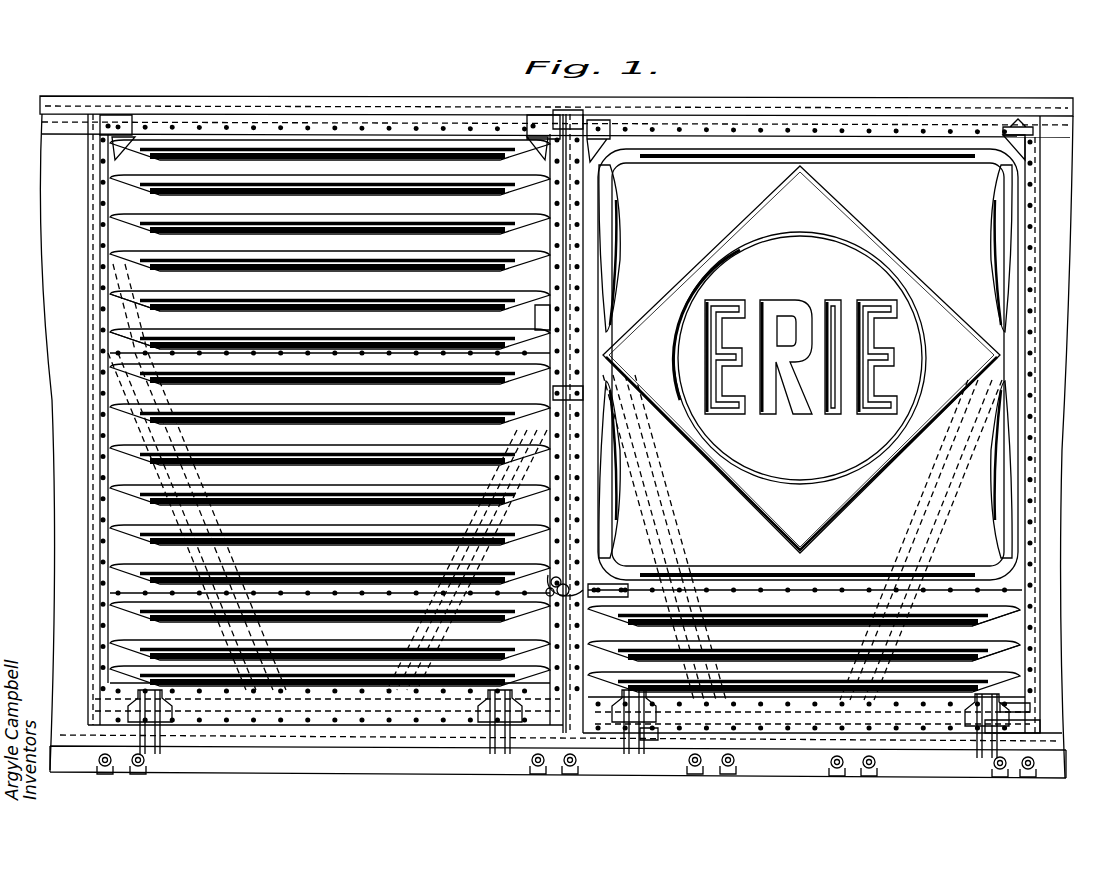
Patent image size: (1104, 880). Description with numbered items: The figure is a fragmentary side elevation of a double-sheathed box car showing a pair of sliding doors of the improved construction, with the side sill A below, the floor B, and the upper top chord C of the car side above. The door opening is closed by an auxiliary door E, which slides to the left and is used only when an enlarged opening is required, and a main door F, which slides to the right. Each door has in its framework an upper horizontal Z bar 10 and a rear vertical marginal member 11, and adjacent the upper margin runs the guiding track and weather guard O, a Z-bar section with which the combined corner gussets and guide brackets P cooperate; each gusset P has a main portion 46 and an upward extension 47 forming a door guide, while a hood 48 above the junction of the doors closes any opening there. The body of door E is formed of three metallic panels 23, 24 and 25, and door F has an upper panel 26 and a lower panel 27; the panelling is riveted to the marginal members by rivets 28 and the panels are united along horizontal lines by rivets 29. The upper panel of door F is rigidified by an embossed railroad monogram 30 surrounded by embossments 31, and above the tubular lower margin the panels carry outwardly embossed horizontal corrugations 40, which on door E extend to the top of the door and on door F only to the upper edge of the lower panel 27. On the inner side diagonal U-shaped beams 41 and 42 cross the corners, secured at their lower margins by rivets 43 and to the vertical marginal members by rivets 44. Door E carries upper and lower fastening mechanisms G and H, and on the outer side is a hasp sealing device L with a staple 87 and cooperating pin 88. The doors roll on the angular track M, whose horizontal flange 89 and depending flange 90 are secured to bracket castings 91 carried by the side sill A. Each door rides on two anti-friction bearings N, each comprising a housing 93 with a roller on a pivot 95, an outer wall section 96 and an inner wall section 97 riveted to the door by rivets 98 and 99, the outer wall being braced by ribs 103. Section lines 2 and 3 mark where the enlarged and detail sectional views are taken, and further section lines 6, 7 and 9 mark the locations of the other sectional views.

The upper top chord C is at (68, 100).
The upper horizontal Z bar 10 is at (388, 128).
The rivets 28 is at (268, 126).
The auxiliary door E is at (138, 198).
The main door F is at (671, 200).
The rear vertical marginal member 11 is at (100, 378).
The metallic panel 23 is at (330, 246).
The metallic panel 24 is at (330, 478).
The lower panel 25 is at (330, 644).
The lower panel 27 is at (1018, 667).
The rivets 29 is at (338, 352).
The horizontally extending corrugations 40 is at (122, 336).
The diagonal beam 41 is at (160, 392).
The diagonal beam 42 is at (545, 445).
The rivets 43 is at (264, 692).
The rivets 44 is at (553, 395).
The main portion of gusset 46 is at (112, 138).
The door guide 47 is at (122, 118).
The hood 48 is at (572, 110).
The combined corner gusset and guide bracket P is at (118, 140).
The embossments 31 is at (918, 158).
The railroad monogram 30 is at (710, 438).
The upper panel 26 is at (799, 358).
The pin 88 is at (600, 548).
The hasp sealing device L is at (616, 558).
The staple 87 is at (552, 582).
The upper door fastening mechanism G is at (525, 306).
The section line 7- 7 is at (513, 290).
The section line 2— 2 is at (332, 62).
The section line 3— 3 is at (527, 150).
The guiding track and weather guard O is at (552, 88).
The section line 6- 6 is at (135, 660).
The floor B is at (58, 714).
The ribs 103 is at (142, 722).
The anti-friction bearing N is at (186, 726).
The door supporting track M is at (230, 746).
The side sill A is at (275, 756).
The lower door fastening mechanism H is at (547, 696).
The horizontal flange 89 is at (447, 736).
The depending flange 90 is at (600, 746).
The wall section 97 is at (618, 736).
The section line 9- 9 is at (630, 790).
The outer wall section 96 is at (645, 740).
The bracket castings 91 is at (716, 770).
The housing 93 is at (968, 718).
The pivot 95 is at (1002, 740).
The rivets 98 is at (1032, 708).
The rivets 99 is at (1030, 736).